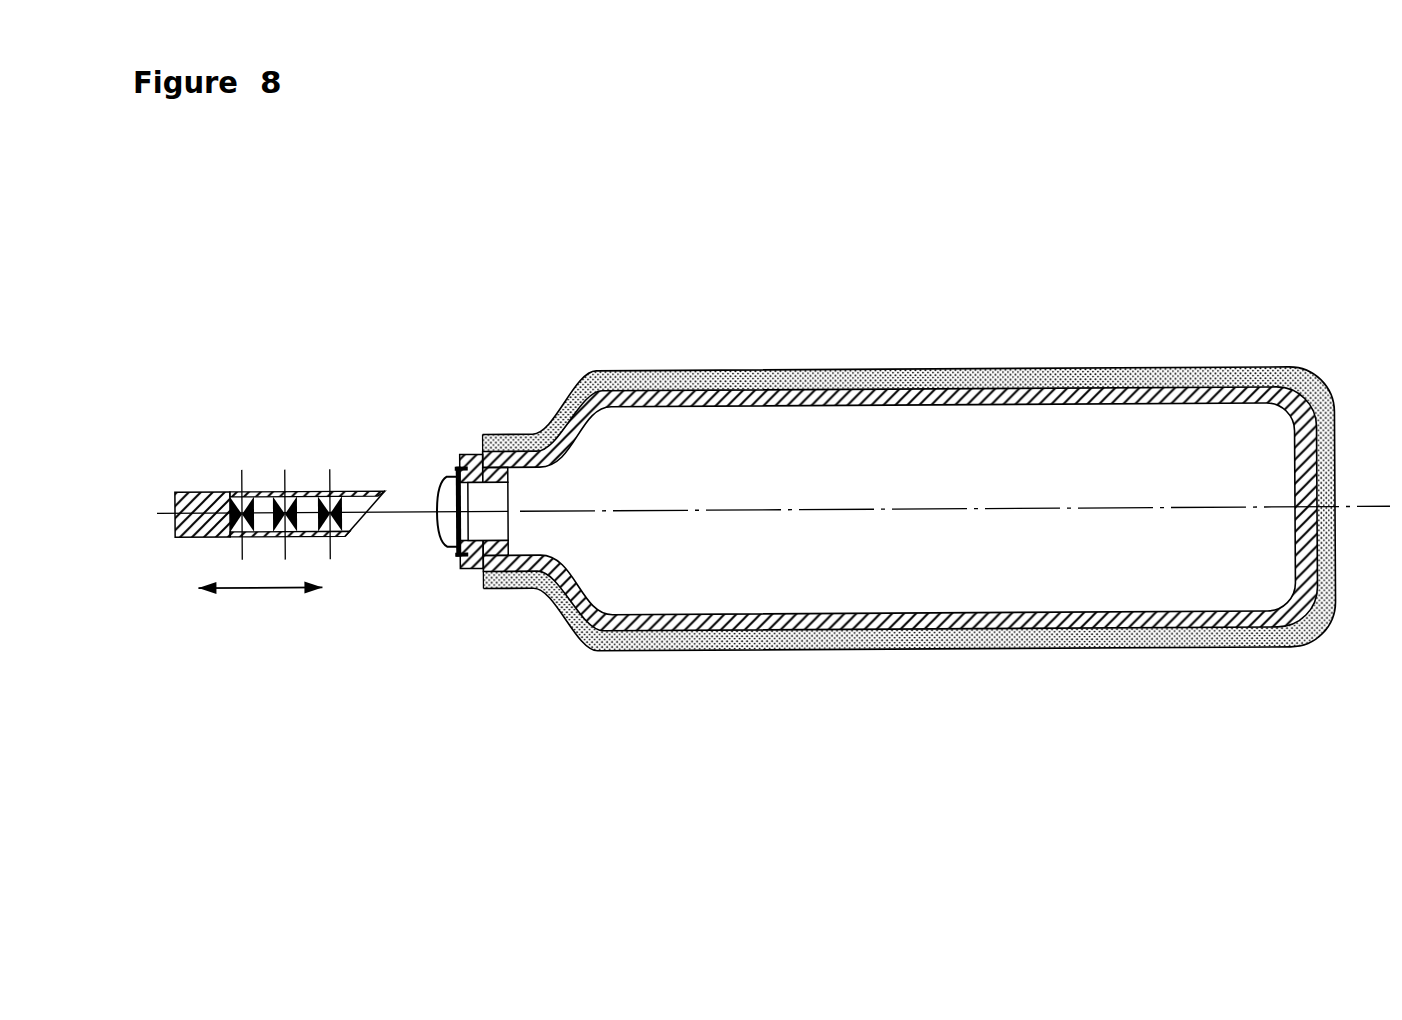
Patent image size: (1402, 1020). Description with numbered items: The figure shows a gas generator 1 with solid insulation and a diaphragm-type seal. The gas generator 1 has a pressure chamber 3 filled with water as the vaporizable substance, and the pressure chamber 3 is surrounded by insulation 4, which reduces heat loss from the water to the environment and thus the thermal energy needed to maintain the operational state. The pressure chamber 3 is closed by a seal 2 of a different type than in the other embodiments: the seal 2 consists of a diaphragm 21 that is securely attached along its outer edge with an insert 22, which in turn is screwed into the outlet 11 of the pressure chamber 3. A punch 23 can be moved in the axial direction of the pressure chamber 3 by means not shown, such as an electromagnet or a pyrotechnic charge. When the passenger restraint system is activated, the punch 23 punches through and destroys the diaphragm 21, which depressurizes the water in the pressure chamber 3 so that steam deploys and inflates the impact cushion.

The gas generator 1 is at (900, 593).
The seal 2 is at (253, 573).
The pressure chamber 3 is at (773, 484).
The insulation 4 is at (909, 471).
The outlet 11 is at (543, 542).
The diaphragm 21 is at (408, 482).
The insert 22 is at (538, 502).
The punch 23 is at (158, 541).